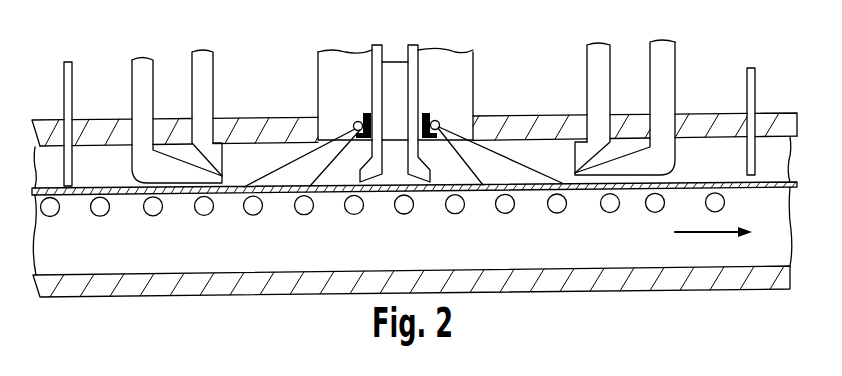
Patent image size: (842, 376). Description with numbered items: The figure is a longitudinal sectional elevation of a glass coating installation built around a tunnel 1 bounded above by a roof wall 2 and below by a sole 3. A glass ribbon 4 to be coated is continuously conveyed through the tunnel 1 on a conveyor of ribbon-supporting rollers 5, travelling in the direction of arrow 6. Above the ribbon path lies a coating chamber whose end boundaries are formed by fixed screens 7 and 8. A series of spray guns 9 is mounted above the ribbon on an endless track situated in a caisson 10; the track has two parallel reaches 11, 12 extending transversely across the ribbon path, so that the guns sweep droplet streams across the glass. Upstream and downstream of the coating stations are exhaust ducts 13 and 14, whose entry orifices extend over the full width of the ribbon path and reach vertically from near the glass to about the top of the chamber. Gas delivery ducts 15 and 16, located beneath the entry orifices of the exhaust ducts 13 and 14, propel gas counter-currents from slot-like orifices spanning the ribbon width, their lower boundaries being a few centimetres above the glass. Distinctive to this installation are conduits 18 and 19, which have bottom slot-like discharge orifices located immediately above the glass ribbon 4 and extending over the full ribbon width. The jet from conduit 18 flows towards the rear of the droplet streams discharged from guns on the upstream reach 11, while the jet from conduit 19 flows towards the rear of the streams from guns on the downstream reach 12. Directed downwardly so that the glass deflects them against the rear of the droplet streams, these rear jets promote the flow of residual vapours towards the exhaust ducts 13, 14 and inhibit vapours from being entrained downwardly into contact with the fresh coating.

The tunnel 1 is at (290, 250).
The roof wall 2 is at (702, 113).
The sole 3 is at (712, 285).
The glass ribbon 4 is at (778, 186).
The ribbon-supporting rollers 5 is at (204, 216).
The arrow 6 is at (680, 233).
The fixed screen 7 is at (64, 100).
The fixed screen 8 is at (755, 72).
The spray guns 9 is at (354, 125).
The caisson 10 is at (438, 122).
The upstream reach 11 is at (365, 120).
The downstream reach 12 is at (440, 124).
The exhaust duct 13 is at (213, 77).
The exhaust duct 14 is at (608, 72).
The gas delivery duct 15 is at (132, 88).
The gas delivery duct 16 is at (675, 62).
The conduit 18 is at (371, 60).
The conduit 19 is at (419, 58).